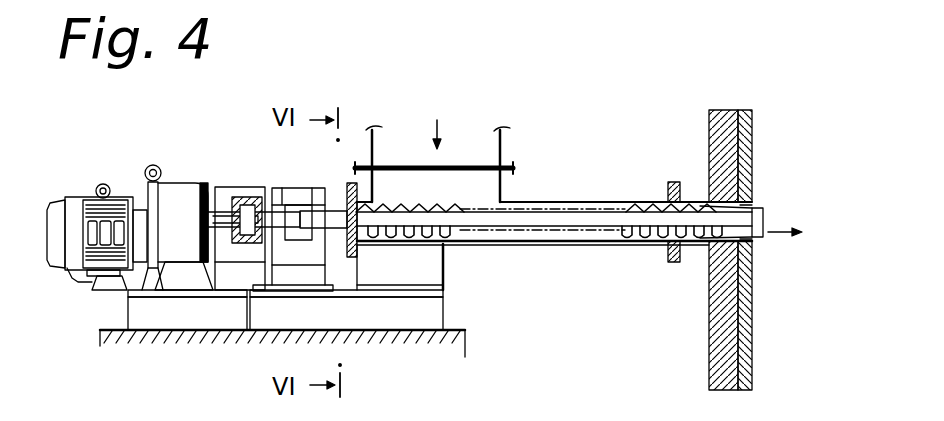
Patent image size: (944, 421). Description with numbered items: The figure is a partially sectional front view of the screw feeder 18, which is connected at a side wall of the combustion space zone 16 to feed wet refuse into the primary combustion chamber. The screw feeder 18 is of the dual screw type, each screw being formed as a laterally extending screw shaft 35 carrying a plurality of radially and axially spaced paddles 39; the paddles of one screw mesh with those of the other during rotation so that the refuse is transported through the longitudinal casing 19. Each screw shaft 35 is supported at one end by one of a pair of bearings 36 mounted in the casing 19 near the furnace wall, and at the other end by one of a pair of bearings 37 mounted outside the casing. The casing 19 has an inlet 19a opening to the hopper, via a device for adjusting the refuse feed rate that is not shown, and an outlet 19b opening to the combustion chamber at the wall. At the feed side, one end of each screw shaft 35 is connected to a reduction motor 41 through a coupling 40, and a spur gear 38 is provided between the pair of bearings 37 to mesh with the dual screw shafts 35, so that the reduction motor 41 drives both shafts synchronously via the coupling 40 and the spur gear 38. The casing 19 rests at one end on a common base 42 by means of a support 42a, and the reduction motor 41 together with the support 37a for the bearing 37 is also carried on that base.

The reduction motor 41 is at (84, 279).
The coupling 40 is at (232, 250).
The bearing 37 is at (268, 268).
The spur gear 38 is at (292, 268).
The support for the bearing 37a is at (312, 283).
The common base 42 is at (415, 312).
The support 42a is at (443, 286).
The screw feeder 18 is at (538, 247).
The paddles 39 is at (454, 243).
The screw shaft 35 is at (587, 228).
The casing 19 is at (567, 200).
The inlet of the casing 19a is at (493, 137).
The outlet of the casing 19b is at (765, 218).
The combustion space zone 16 is at (814, 308).
The bearing 36 is at (757, 238).